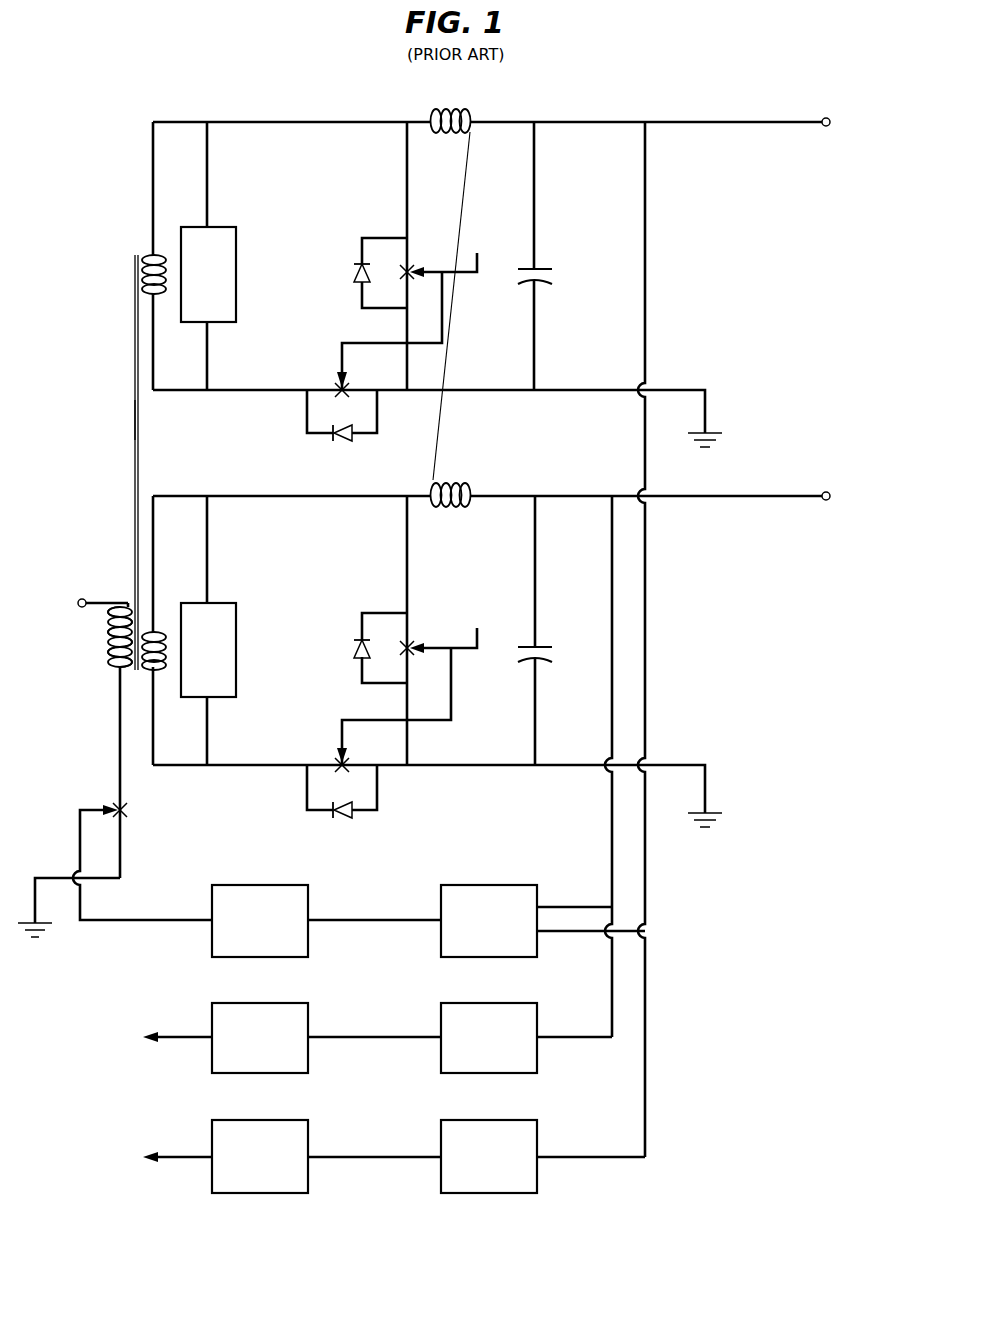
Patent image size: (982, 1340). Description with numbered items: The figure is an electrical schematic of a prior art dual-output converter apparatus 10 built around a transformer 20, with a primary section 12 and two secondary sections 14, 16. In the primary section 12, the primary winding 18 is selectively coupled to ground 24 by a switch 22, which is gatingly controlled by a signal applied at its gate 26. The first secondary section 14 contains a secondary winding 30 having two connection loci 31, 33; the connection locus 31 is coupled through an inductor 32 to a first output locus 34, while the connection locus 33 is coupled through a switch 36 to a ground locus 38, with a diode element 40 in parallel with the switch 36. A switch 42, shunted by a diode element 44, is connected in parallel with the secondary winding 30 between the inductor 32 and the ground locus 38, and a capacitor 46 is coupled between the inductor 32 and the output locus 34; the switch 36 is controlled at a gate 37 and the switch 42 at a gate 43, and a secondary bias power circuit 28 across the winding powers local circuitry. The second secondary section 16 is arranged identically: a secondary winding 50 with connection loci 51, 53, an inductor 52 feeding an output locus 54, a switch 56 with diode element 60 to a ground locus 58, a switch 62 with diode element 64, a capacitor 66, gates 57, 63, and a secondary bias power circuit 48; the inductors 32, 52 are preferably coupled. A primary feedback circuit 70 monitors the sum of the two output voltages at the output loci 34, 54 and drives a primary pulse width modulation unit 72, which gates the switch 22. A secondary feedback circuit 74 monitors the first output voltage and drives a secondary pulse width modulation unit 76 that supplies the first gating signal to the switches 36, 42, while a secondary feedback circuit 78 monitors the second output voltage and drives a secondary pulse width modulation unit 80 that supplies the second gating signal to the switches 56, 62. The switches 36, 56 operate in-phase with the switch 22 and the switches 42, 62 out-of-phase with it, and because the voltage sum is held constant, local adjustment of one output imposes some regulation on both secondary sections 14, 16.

The converter apparatus 10 is at (74, 715).
The primary section 12 is at (100, 120).
The secondary section 14 is at (845, 680).
The secondary section 16 is at (845, 308).
The primary winding 18 is at (106, 644).
The transformer 20 is at (134, 424).
The switch 22 is at (126, 812).
The ground 24 is at (36, 942).
The gate 26 is at (86, 808).
The secondary bias power circuit 28 is at (212, 603).
The secondary winding 30 is at (160, 632).
The connection locus 31 is at (151, 546).
The inductor 32 is at (470, 482).
The connection locus 33 is at (156, 745).
The output locus 34 is at (830, 492).
The switch 36 is at (352, 772).
The gate 37 is at (338, 757).
The ground locus 38 is at (718, 816).
The diode element 40 is at (345, 820).
The switch 42 is at (411, 640).
The gate 43 is at (418, 654).
The diode element 44 is at (355, 652).
The capacitor 46 is at (555, 650).
The secondary bias power circuit 48 is at (213, 227).
The secondary winding 50 is at (147, 254).
The connection locus 51 is at (151, 168).
The inductor 52 is at (470, 112).
The connection locus 53 is at (151, 325).
The output locus 54 is at (830, 118).
The switch 56 is at (352, 396).
The gate 57 is at (338, 380).
The ground locus 58 is at (718, 436).
The diode element 60 is at (345, 444).
The switch 62 is at (411, 264).
The gate 63 is at (418, 278).
The diode element 64 is at (355, 277).
The capacitor 66 is at (555, 278).
The primary feedback circuit 70 is at (486, 884).
The primary pulse width modulation unit 72 is at (256, 884).
The secondary feedback circuit 74 is at (488, 1002).
The secondary pulse width modulation unit 76 is at (262, 1002).
The secondary feedback circuit 78 is at (488, 1119).
The secondary pulse width modulation unit 80 is at (262, 1119).